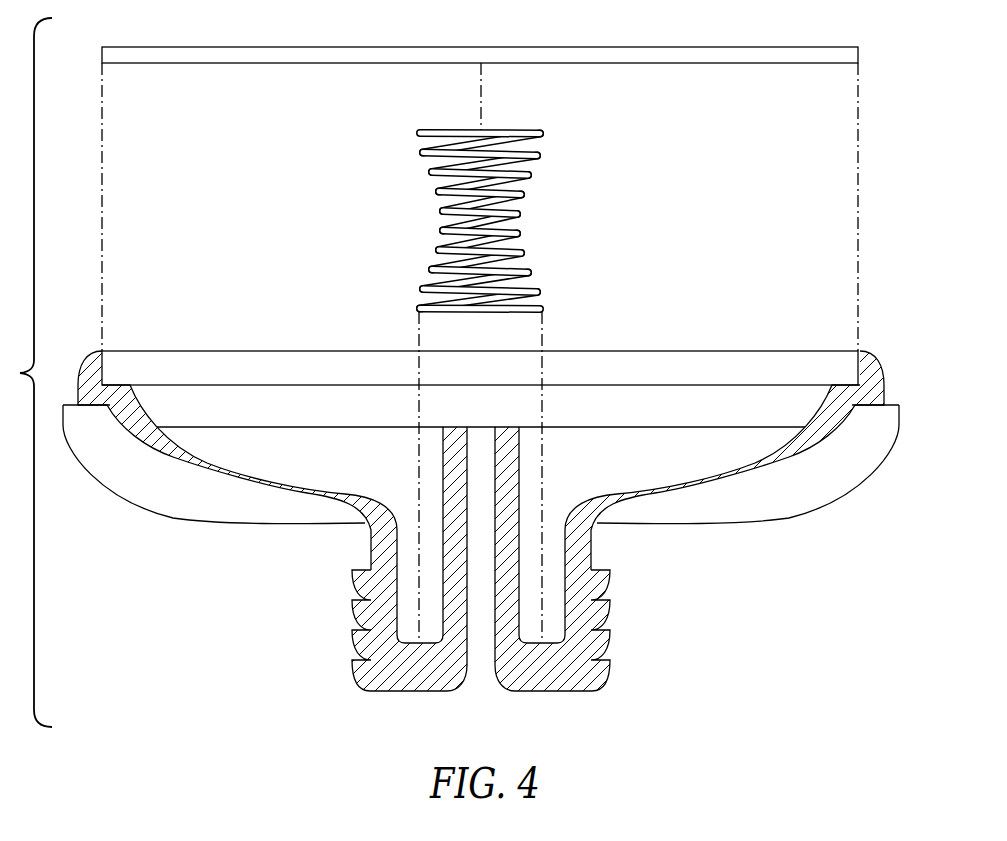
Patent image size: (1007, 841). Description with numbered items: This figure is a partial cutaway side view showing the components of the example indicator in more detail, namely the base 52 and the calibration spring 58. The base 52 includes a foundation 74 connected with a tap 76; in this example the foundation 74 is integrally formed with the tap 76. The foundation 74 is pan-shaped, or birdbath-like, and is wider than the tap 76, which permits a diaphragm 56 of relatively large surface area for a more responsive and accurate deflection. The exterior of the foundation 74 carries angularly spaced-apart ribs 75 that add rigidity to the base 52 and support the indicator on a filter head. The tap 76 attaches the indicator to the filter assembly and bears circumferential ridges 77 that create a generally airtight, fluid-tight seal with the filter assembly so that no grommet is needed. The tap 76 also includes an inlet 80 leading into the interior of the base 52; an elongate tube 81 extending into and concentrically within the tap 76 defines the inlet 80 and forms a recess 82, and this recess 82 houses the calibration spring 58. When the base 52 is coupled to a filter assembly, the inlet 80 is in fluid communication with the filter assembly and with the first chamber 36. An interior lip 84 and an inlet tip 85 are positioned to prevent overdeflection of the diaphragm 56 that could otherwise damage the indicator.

The first chamber 36 is at (332, 413).
The base 52 is at (806, 516).
The diaphragm 56 is at (586, 48).
The calibration spring 58 is at (518, 190).
The foundation 74 is at (898, 432).
The ribs 75 is at (90, 482).
The tap 76 is at (609, 568).
The circumferential ridges 77 is at (352, 633).
The inlet 80 is at (478, 682).
The elongate tube 81 is at (512, 478).
The recess 82 is at (412, 643).
The interior lip 84 is at (862, 352).
The inlet tip 85 is at (443, 425).